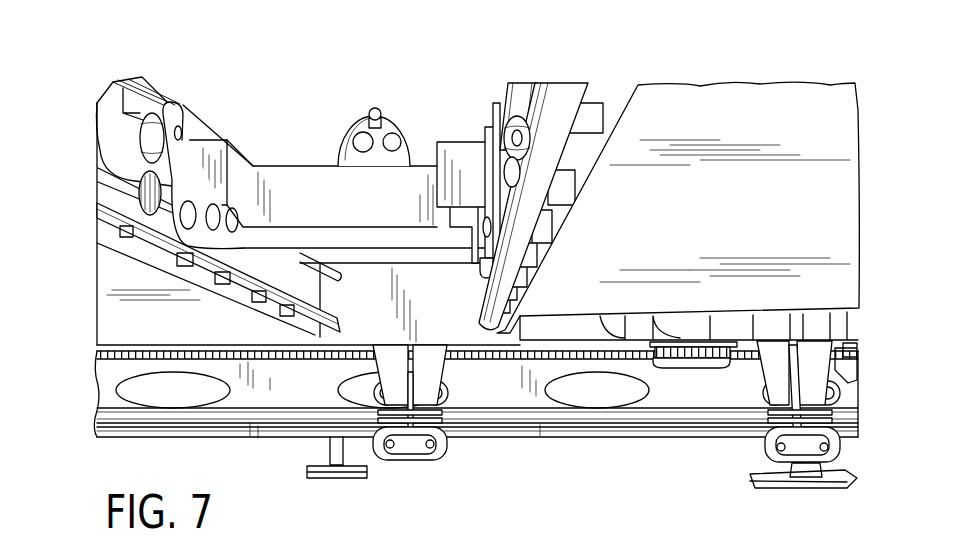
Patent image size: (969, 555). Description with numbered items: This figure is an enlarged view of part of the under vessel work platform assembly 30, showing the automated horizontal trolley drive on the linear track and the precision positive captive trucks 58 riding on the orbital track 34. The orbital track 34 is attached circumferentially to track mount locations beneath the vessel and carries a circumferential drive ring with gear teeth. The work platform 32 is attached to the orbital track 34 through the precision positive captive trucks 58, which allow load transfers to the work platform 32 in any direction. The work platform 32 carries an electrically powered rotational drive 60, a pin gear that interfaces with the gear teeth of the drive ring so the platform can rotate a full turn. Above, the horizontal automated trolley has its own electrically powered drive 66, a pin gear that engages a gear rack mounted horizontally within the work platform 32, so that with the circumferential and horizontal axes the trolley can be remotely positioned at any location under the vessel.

The under vessel work platform assembly 30 is at (710, 76).
The work platform 32 is at (727, 214).
The orbital track 34 is at (578, 410).
The precision positive captive trucks 58 is at (445, 388).
The electrically powered rotational drive 60 is at (662, 368).
The electrically powered drive 66 is at (98, 160).